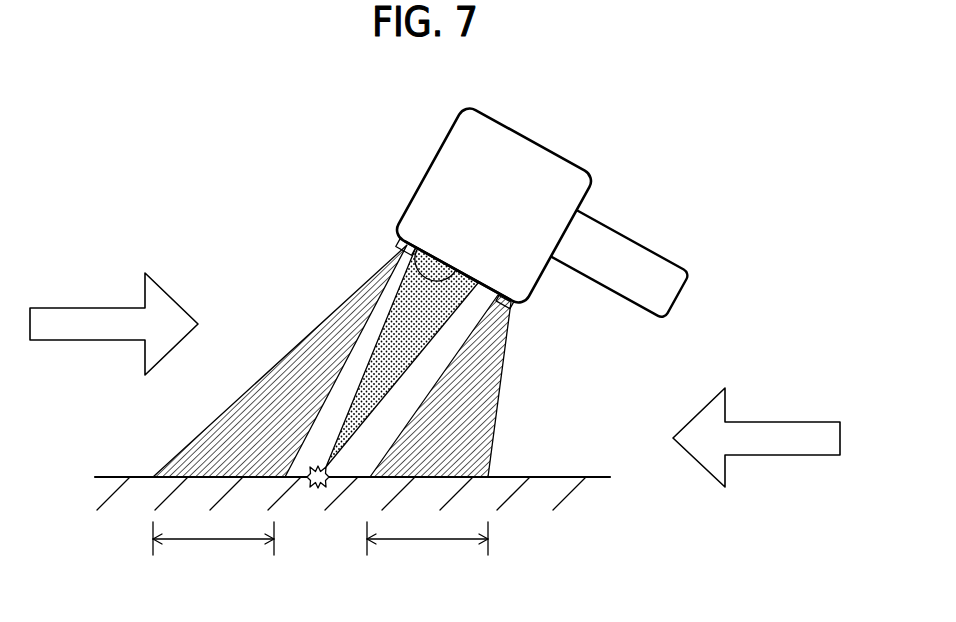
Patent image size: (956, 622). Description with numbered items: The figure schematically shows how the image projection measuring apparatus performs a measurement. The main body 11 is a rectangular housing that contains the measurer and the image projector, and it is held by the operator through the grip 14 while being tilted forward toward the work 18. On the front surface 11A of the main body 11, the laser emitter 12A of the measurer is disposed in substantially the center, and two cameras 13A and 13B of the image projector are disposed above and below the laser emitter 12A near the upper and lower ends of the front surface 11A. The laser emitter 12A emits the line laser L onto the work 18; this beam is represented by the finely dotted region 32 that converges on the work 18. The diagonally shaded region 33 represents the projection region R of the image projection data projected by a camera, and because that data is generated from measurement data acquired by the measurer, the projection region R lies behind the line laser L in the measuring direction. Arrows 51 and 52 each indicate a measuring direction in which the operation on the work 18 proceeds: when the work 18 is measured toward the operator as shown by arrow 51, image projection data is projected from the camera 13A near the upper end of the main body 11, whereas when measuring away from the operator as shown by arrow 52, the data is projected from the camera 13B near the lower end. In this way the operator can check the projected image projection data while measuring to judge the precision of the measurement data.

The main body 11 is at (524, 152).
The front surface 11A is at (473, 312).
The laser emitter 12A is at (408, 274).
The camera 13A is at (400, 240).
The camera 13B is at (512, 305).
The grip 14 is at (632, 252).
The work 18 is at (568, 477).
The finely dotted region 32 is at (397, 343).
The diagonally shaded region 33 is at (292, 358).
The arrow 51 is at (80, 315).
The arrow 52 is at (775, 437).
The line laser L is at (317, 489).
The projection region R is at (320, 546).